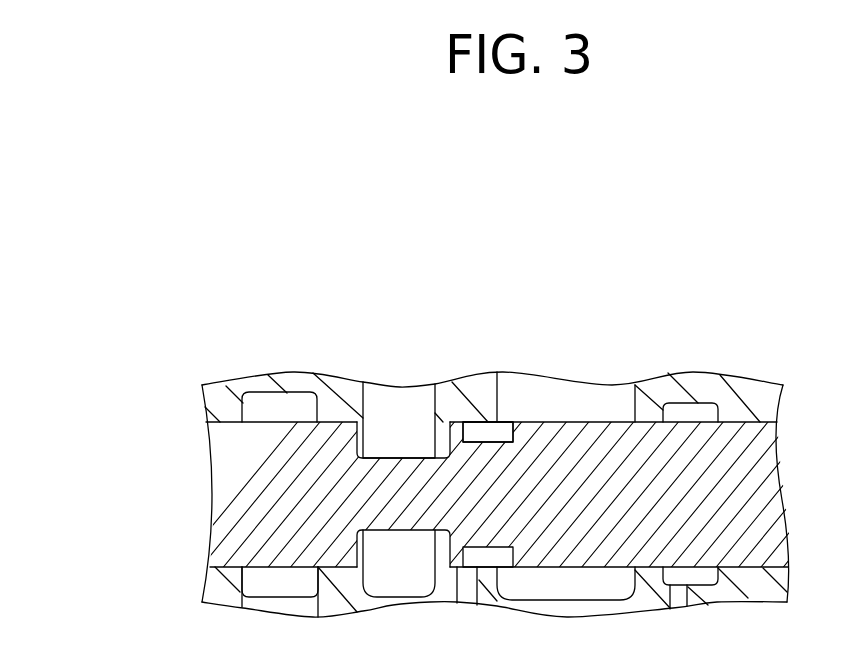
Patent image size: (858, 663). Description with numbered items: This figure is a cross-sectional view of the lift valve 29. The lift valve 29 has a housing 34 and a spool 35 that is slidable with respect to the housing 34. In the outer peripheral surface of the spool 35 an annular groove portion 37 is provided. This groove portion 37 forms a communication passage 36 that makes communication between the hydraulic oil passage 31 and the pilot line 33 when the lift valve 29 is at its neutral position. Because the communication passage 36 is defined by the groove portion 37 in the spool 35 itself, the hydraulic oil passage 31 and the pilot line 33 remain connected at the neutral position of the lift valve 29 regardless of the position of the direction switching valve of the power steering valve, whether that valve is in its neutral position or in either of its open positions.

The lift valve 29 is at (185, 365).
The hydraulic oil passage 31 is at (563, 407).
The pilot line 33 is at (462, 583).
The housing 34 is at (728, 408).
The spool 35 is at (727, 497).
The communication passage 36 is at (488, 432).
The groove portion 37 is at (477, 420).